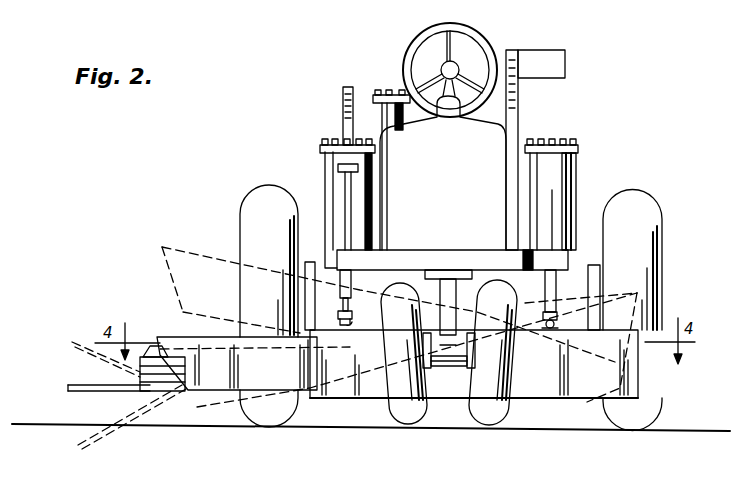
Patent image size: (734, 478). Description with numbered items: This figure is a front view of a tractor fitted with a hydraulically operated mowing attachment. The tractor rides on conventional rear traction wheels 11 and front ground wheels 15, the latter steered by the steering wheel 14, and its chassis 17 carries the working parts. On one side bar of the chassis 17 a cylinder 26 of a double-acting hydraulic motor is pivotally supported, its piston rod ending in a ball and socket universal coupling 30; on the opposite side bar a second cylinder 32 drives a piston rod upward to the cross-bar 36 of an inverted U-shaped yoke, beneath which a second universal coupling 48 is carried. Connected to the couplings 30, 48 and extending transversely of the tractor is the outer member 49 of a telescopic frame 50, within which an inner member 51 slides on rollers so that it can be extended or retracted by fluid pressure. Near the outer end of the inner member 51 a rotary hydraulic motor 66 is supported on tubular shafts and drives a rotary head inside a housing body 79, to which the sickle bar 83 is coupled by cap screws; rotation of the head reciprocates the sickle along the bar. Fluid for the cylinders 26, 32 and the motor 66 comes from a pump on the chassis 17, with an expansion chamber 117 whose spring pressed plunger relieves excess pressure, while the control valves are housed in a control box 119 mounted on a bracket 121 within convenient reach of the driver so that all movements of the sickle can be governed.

The traction wheels 11 is at (253, 196).
The steering wheel 14 is at (412, 48).
The front ground wheels 15 is at (482, 420).
The tractor chassis 17 is at (446, 245).
The cylinder 26 is at (571, 184).
The universal coupling 30 is at (547, 328).
The cylinder 32 is at (328, 186).
The cross-bar 36 is at (345, 120).
The universal coupling 48 is at (351, 326).
The outer member 49 is at (586, 400).
The telescopic frame 50 is at (548, 404).
The inner member 51 is at (279, 385).
The rotary hydraulic motor 66 is at (157, 345).
The housing body 79 is at (160, 383).
The sickle bar 83 is at (70, 387).
The expansion chamber 117 is at (396, 102).
The control box 119 is at (550, 62).
The bracket 121 is at (520, 112).